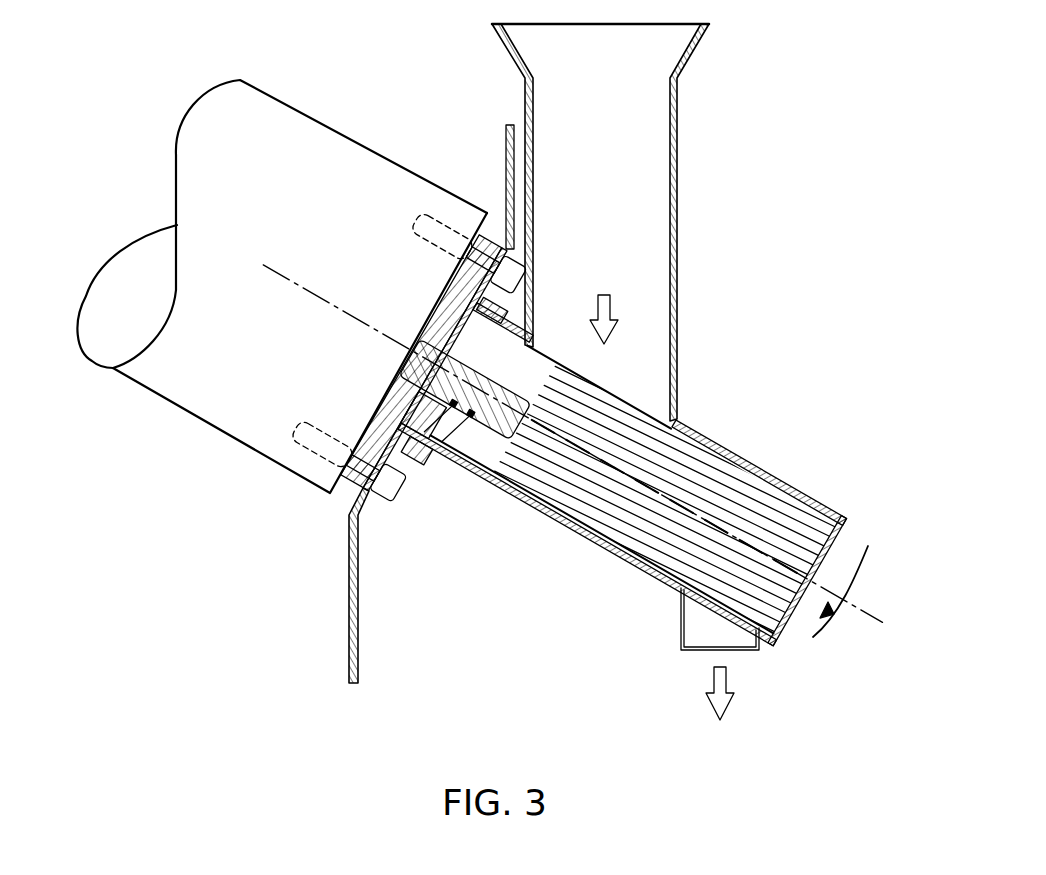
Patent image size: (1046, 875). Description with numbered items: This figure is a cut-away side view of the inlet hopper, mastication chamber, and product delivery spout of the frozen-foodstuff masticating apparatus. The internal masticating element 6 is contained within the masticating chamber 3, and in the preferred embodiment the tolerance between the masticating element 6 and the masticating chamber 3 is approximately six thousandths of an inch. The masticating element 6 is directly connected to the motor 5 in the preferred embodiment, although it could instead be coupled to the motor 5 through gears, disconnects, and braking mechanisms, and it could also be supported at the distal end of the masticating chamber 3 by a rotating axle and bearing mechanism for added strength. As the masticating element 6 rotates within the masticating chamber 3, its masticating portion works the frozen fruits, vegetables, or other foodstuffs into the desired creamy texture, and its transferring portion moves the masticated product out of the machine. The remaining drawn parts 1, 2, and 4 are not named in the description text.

The mounting bracket 1 is at (350, 617).
The hopper 2 is at (684, 238).
The masticating chamber 3 is at (718, 429).
The outlet 4 is at (758, 650).
The motor 5 is at (210, 427).
The masticating element 6 is at (768, 518).